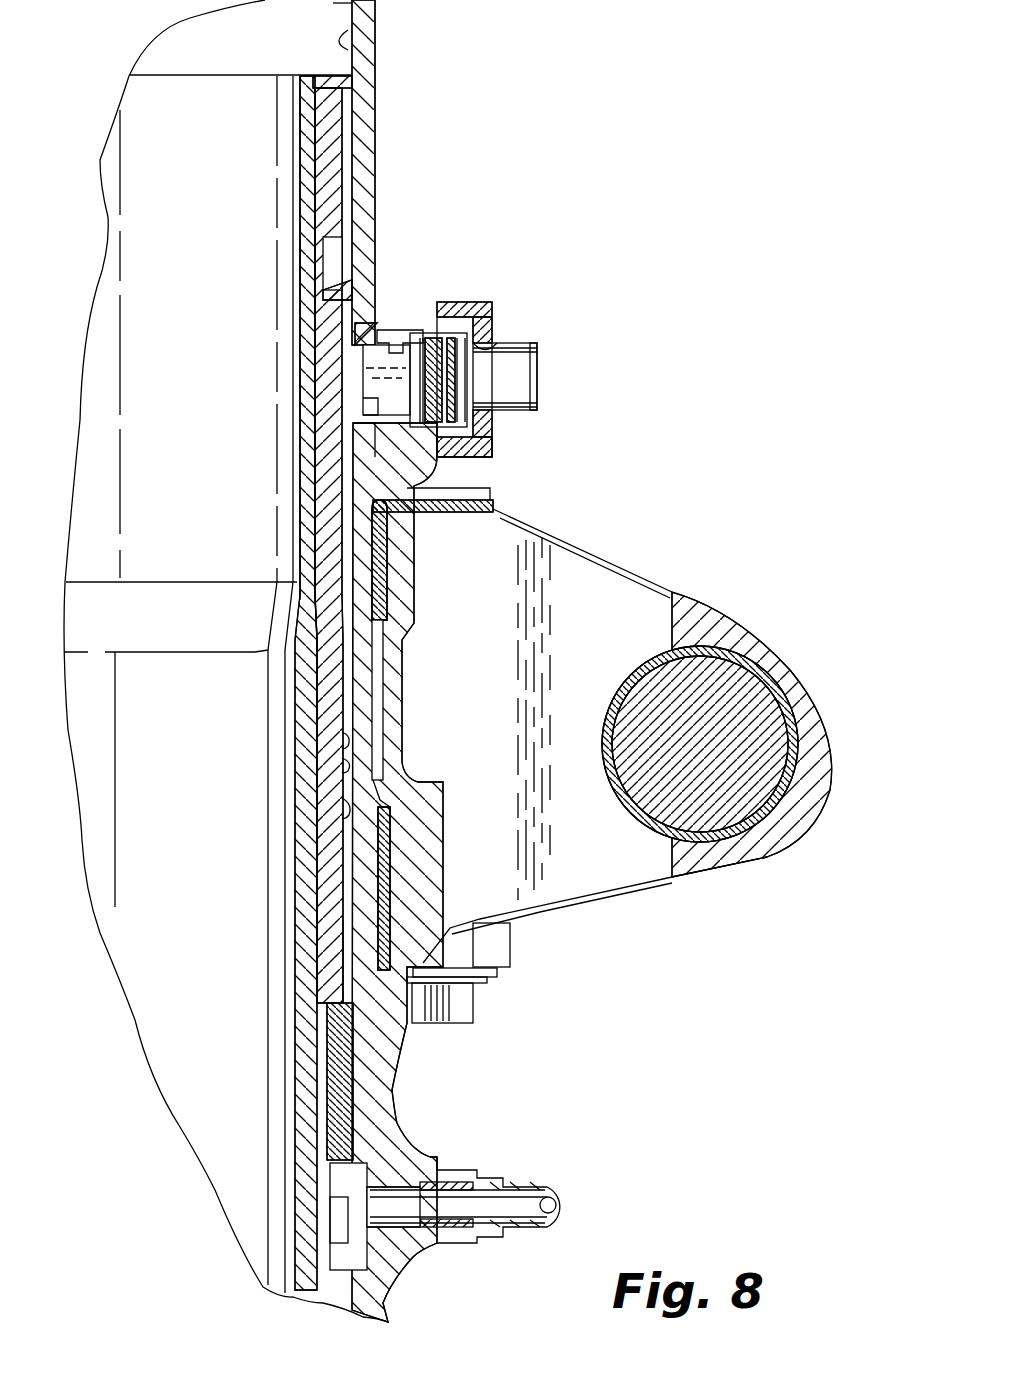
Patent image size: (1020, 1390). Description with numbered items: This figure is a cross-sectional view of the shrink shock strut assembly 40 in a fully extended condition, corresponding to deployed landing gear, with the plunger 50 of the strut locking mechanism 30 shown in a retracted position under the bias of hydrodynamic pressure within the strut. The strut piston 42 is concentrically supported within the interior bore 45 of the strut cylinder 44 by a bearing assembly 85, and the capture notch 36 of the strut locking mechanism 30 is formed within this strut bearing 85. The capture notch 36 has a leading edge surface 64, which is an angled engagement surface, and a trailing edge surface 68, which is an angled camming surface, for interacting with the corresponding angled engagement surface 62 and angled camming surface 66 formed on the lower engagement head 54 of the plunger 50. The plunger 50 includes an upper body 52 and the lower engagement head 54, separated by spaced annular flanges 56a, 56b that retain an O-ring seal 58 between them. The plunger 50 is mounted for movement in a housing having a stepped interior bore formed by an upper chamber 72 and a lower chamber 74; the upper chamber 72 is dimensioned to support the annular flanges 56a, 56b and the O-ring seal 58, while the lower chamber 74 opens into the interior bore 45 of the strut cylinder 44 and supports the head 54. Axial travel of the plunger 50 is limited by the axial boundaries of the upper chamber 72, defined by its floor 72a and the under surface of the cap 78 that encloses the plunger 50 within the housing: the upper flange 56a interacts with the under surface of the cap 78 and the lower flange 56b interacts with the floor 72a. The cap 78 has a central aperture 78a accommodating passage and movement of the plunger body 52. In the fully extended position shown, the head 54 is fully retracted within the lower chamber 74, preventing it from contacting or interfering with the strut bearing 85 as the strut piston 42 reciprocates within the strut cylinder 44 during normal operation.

The strut locking mechanism 30 is at (608, 265).
The capture notch 36 is at (327, 762).
The shrink shock strut assembly 40 is at (462, 133).
The strut piston 42 is at (308, 1078).
The strut cylinder 44 is at (375, 92).
The interior bore 45 is at (362, 48).
The plunger 50 is at (527, 373).
The upper body 52 is at (535, 412).
The lower engagement head 54 is at (362, 360).
The upper annular flange 56a is at (455, 380).
The lower annular flange 56b is at (436, 338).
The O-ring seal 58 is at (492, 305).
The angled engagement surface 62 is at (392, 330).
The leading edge surface 64 is at (323, 740).
The angled camming surface 66 is at (367, 392).
The trailing edge surface 68 is at (323, 810).
The upper chamber 72 is at (412, 333).
The floor 72a is at (360, 447).
The lower chamber 74 is at (367, 402).
The cap 78 is at (477, 455).
The central aperture 78a is at (500, 347).
The bearing assembly 85 is at (300, 545).